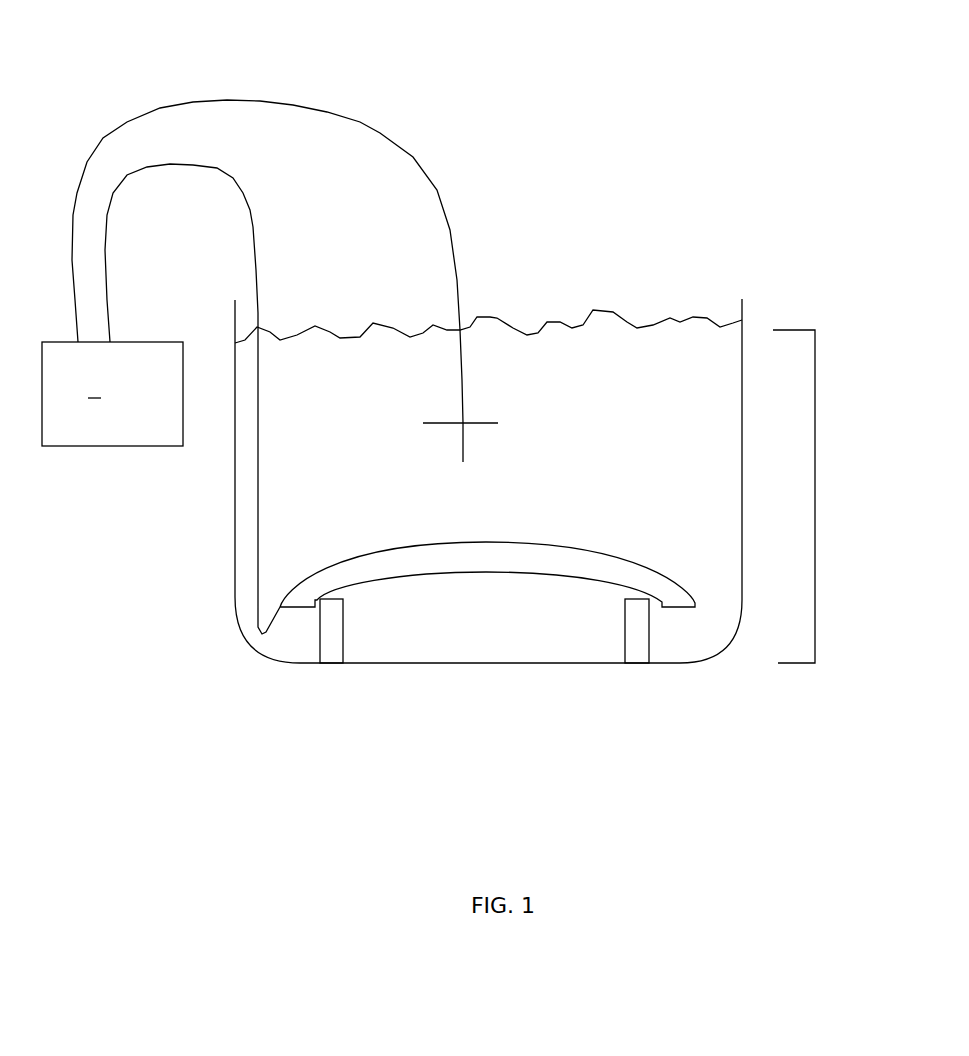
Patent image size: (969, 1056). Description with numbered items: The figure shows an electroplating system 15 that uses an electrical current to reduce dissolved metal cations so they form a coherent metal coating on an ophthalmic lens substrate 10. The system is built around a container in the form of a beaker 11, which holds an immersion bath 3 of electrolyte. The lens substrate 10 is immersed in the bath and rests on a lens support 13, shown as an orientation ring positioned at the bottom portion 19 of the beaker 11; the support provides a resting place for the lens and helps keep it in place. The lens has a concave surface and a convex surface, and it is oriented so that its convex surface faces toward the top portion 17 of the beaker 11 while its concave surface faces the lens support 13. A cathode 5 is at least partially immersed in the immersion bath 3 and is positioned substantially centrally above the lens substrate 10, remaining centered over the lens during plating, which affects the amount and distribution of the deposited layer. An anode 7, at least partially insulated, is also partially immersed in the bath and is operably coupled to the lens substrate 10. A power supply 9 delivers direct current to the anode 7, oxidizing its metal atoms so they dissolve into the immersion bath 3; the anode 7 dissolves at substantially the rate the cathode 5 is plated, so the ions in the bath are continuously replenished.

The immersion bath 3 is at (553, 390).
The cathode 5 is at (445, 208).
The anode 7 is at (253, 227).
The power supply 9 is at (112, 394).
The ophthalmic lens substrate 10 is at (522, 542).
The beaker 11 is at (233, 488).
The lens support 13 is at (320, 642).
The electroplating system 15 is at (802, 83).
The top portion 17 is at (817, 415).
The bottom portion 19 is at (817, 641).